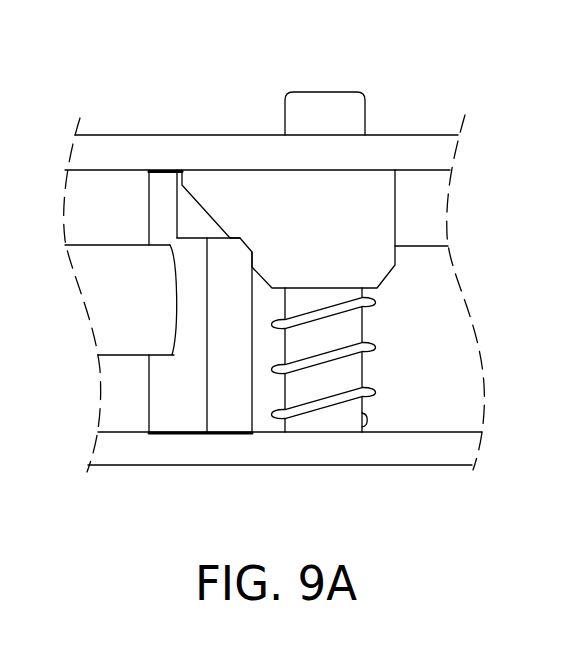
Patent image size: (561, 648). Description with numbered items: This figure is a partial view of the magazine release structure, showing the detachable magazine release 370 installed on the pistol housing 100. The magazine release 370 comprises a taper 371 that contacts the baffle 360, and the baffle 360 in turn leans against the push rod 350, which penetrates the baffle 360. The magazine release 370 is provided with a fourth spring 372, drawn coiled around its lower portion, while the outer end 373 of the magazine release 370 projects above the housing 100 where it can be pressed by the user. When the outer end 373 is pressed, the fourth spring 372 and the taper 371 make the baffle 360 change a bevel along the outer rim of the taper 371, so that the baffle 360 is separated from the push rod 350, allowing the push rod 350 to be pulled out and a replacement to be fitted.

The pistol housing 100 is at (228, 452).
The push rod 350 is at (118, 257).
The baffle 360 is at (163, 190).
The magazine release 370 is at (325, 24).
The taper 371 is at (248, 187).
The fourth spring 372 is at (373, 302).
The outer end 373 is at (317, 115).